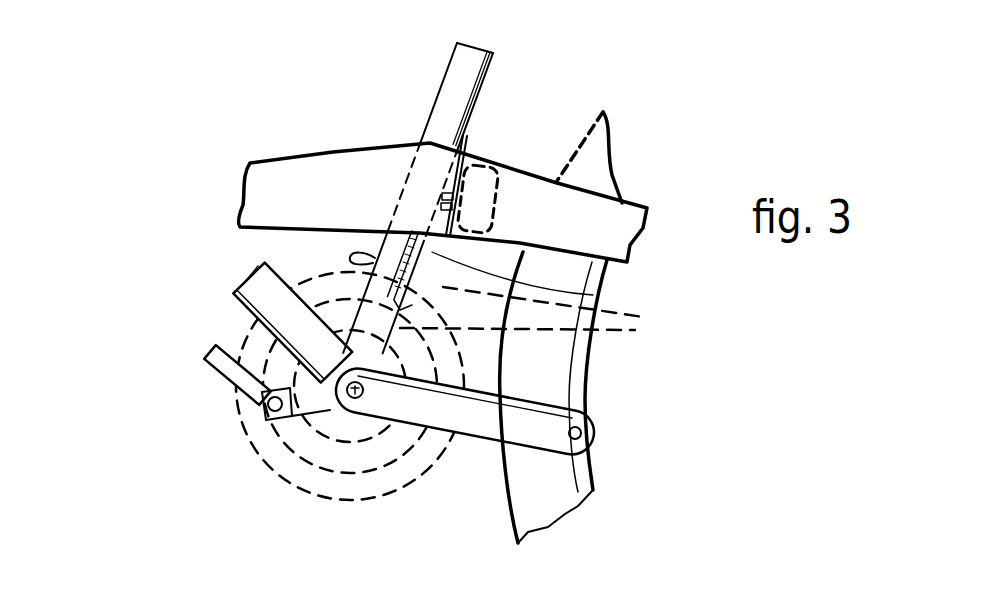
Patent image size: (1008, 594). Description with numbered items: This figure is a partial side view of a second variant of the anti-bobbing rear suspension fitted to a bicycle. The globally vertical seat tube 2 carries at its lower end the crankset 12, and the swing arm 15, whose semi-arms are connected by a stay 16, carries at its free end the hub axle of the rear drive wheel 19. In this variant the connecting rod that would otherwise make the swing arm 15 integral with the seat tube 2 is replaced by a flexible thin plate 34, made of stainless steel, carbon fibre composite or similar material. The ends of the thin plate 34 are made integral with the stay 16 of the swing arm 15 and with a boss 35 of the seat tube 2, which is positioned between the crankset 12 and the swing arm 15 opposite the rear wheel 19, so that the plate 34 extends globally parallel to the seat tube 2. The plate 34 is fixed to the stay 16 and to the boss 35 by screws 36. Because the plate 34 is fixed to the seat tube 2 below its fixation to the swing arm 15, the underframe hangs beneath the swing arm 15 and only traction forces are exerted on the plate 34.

The seat tube 2 is at (432, 113).
The crankset 12 is at (340, 407).
The swing arm 15 is at (598, 186).
The stay 16 is at (497, 202).
The rear drive wheel 19 is at (587, 387).
The flexible thin plate 34 is at (593, 295).
The boss 35 is at (432, 375).
The screws 36 is at (446, 202).